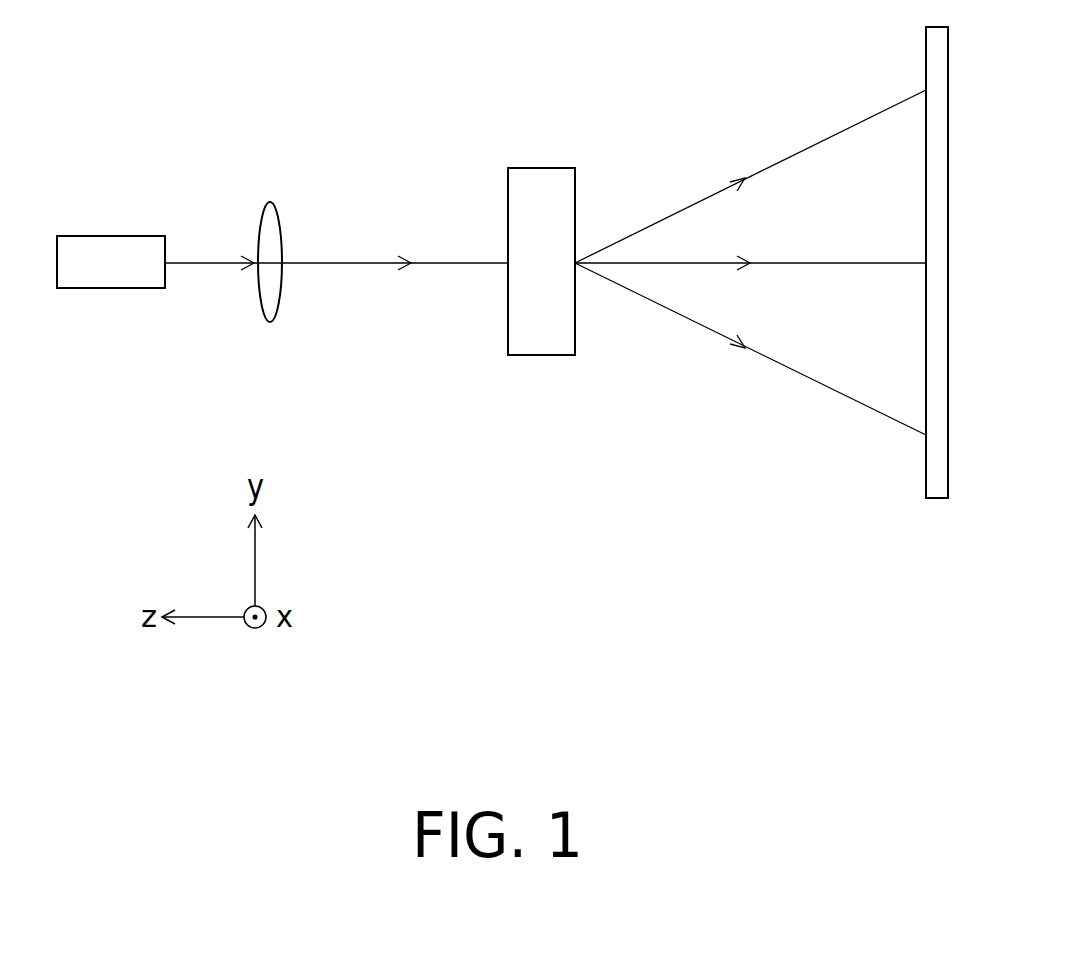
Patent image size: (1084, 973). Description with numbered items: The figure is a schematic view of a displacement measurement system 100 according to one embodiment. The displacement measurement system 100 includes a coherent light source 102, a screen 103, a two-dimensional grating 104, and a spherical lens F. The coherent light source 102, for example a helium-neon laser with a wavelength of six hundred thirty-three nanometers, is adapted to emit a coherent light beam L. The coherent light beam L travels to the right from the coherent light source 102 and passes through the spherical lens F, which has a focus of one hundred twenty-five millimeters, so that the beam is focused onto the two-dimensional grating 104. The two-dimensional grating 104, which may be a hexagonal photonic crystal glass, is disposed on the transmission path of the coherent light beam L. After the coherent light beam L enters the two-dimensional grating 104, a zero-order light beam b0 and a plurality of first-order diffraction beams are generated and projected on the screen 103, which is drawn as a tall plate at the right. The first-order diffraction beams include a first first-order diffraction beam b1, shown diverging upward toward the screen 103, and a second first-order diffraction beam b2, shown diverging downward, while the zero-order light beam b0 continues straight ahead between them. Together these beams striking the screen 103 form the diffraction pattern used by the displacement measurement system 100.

The displacement measurement system 100 is at (960, 732).
The coherent light source 102 is at (112, 236).
The screen 103 is at (933, 500).
The two-dimensional grating 104 is at (540, 360).
The spherical lens F is at (270, 233).
The coherent light beam L is at (455, 257).
The zero-order light beam b0 is at (778, 267).
The first first-order diffraction beam b1 is at (675, 210).
The second first-order diffraction beam b2 is at (690, 325).